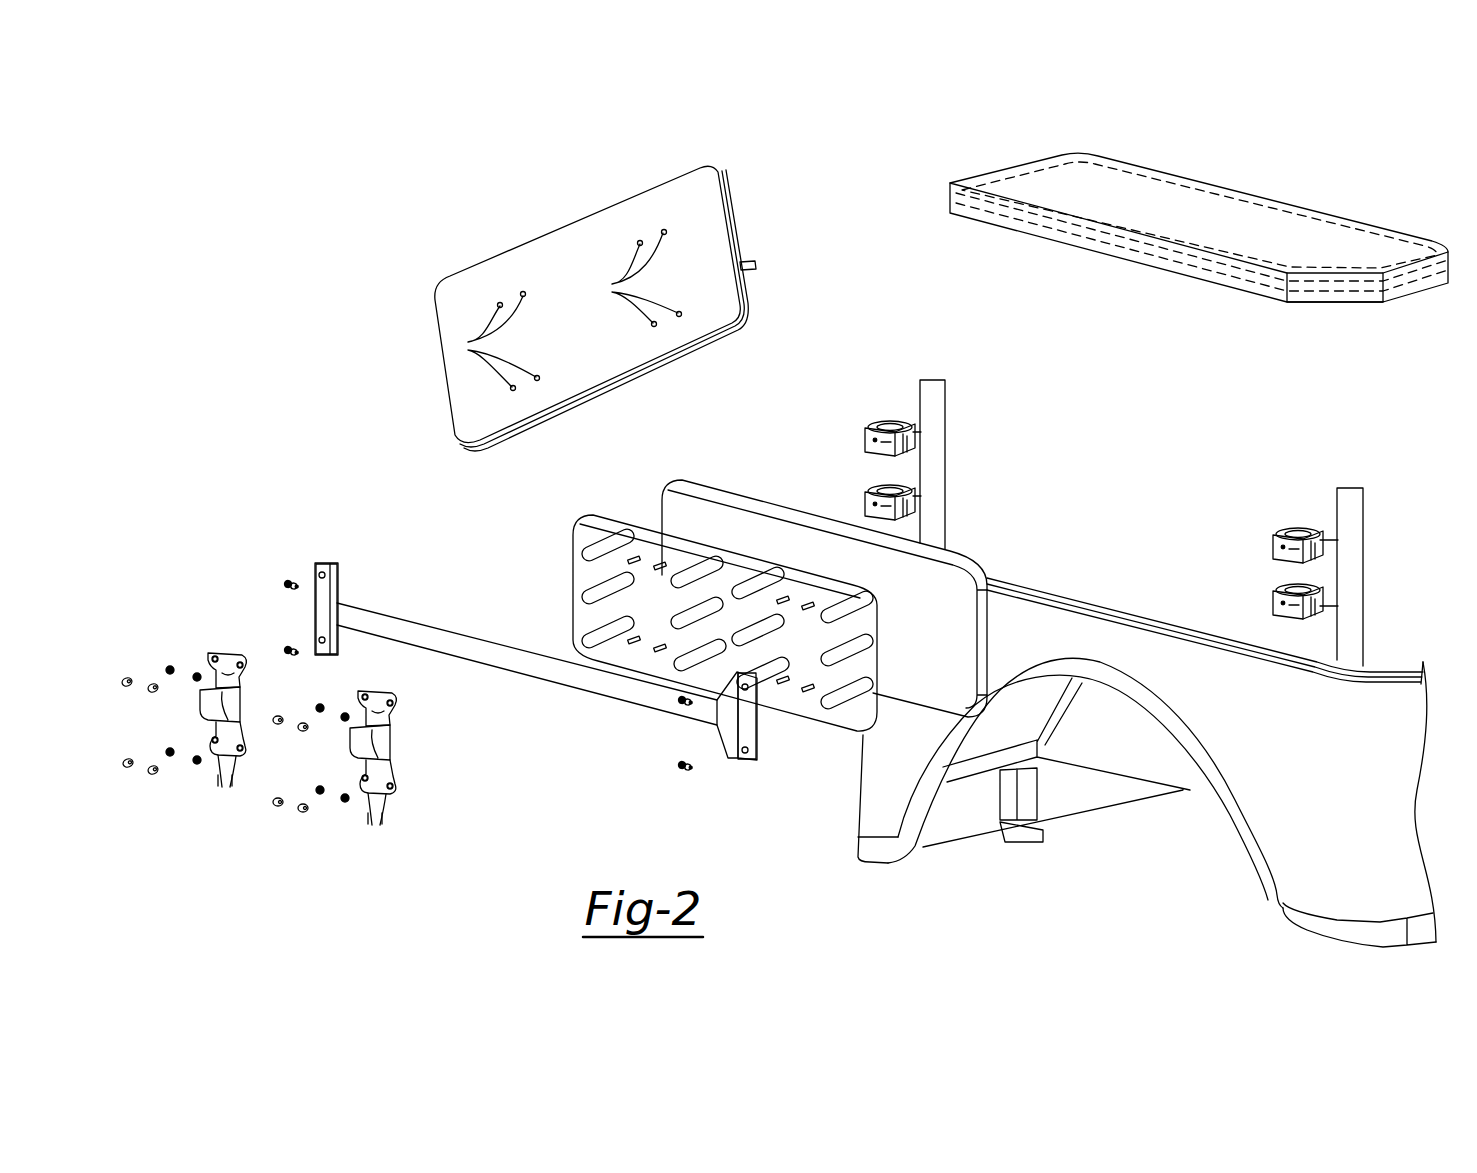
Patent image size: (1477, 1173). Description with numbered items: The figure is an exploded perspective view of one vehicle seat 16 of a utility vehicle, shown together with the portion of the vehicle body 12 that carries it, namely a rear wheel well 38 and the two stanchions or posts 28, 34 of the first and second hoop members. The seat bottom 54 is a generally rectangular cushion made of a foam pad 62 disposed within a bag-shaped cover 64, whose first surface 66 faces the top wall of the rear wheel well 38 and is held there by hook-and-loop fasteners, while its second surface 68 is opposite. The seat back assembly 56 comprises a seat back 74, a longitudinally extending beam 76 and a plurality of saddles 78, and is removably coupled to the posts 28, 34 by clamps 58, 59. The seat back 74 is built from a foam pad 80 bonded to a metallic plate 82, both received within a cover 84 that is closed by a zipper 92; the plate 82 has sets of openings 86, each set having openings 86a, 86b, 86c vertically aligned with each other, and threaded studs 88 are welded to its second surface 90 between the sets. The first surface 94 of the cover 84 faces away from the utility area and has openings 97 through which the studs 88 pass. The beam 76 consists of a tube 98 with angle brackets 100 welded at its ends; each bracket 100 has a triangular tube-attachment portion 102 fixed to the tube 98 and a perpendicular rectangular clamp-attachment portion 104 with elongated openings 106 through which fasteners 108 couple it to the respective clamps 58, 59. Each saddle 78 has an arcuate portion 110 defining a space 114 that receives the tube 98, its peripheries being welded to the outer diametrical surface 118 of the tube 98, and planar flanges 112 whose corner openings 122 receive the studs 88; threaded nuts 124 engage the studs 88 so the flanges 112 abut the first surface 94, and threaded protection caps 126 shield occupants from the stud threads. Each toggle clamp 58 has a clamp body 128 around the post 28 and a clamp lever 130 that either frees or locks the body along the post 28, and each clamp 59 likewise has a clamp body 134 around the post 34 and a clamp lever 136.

The vehicle body 12 is at (1305, 880).
The vehicle seat 16 is at (1148, 128).
The post 28 is at (935, 448).
The post 34 is at (1362, 556).
The rear wheel well 38 is at (1072, 908).
The seat bottom 54 is at (1205, 300).
The seat back assembly 56 is at (525, 777).
The clamp 58 is at (878, 422).
The clamp 59 is at (1297, 528).
The foam pad 62 is at (1395, 235).
The cover 64 is at (1312, 198).
The first surface 66 is at (1338, 303).
The second surface 68 is at (1210, 200).
The seat back 74 is at (838, 322).
The longitudinally extending beam 76 is at (590, 702).
The saddle 78 is at (215, 645).
The foam pad 80 is at (700, 490).
The plate 82 is at (573, 545).
The cover 84 is at (742, 198).
The set of openings 86 is at (608, 522).
The opening 86a is at (590, 555).
The opening 86b is at (590, 595).
The opening 86c is at (590, 640).
The threaded stud 88 is at (660, 645).
The second surface 90 is at (875, 716).
The zipper 92 is at (760, 266).
The first surface 94 is at (572, 247).
The opening 97 is at (562, 310).
The tube 98 is at (440, 628).
The angle bracket 100 is at (337, 565).
The tube-attachment portion 102 is at (338, 585).
The clamp-attachment portion 104 is at (320, 583).
The opening 106 is at (325, 577).
The fastener 108 is at (288, 650).
The arcuate portion 110 is at (200, 708).
The flange 112 is at (243, 665).
The space 114 is at (240, 706).
The outer diametrical surface 118 is at (620, 690).
The opening 122 is at (225, 766).
The threaded nut 124 is at (197, 673).
The threaded protection cap 126 is at (153, 684).
The clamp body 128 is at (880, 455).
The clamp lever 130 is at (925, 437).
The clamp body 134 is at (1290, 600).
The clamp lever 136 is at (1350, 540).